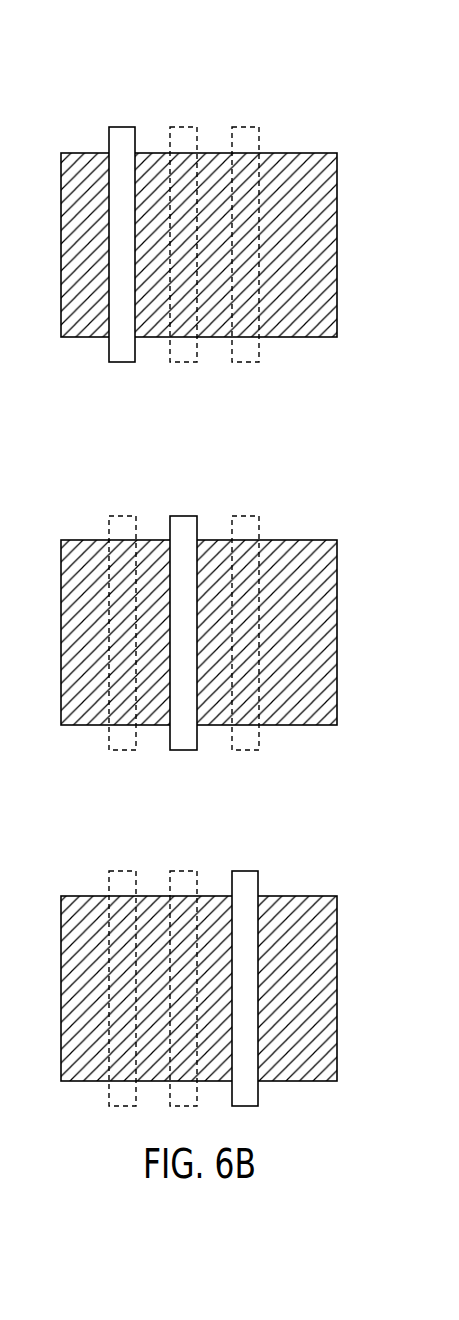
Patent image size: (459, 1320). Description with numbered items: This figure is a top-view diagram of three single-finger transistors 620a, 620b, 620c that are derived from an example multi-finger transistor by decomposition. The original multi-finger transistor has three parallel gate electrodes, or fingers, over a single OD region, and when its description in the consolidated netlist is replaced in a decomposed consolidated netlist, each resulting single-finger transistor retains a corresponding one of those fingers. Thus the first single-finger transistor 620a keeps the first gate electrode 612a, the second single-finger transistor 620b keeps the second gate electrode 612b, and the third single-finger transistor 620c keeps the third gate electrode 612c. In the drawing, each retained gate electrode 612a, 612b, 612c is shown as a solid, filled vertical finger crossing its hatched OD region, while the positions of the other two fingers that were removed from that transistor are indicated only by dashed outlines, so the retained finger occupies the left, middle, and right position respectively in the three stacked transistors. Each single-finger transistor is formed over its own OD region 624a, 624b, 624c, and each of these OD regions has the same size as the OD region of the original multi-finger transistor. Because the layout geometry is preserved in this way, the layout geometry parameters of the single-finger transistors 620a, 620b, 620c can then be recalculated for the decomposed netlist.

The single-finger transistor 620a is at (199, 189).
The gate electrode 612a is at (122, 135).
The OD region 624a is at (293, 167).
The single-finger transistor 620b is at (199, 578).
The gate electrode 612b is at (178, 523).
The OD region 624b is at (293, 555).
The single-finger transistor 620c is at (199, 933).
The gate electrode 612c is at (243, 878).
The OD region 624c is at (295, 907).